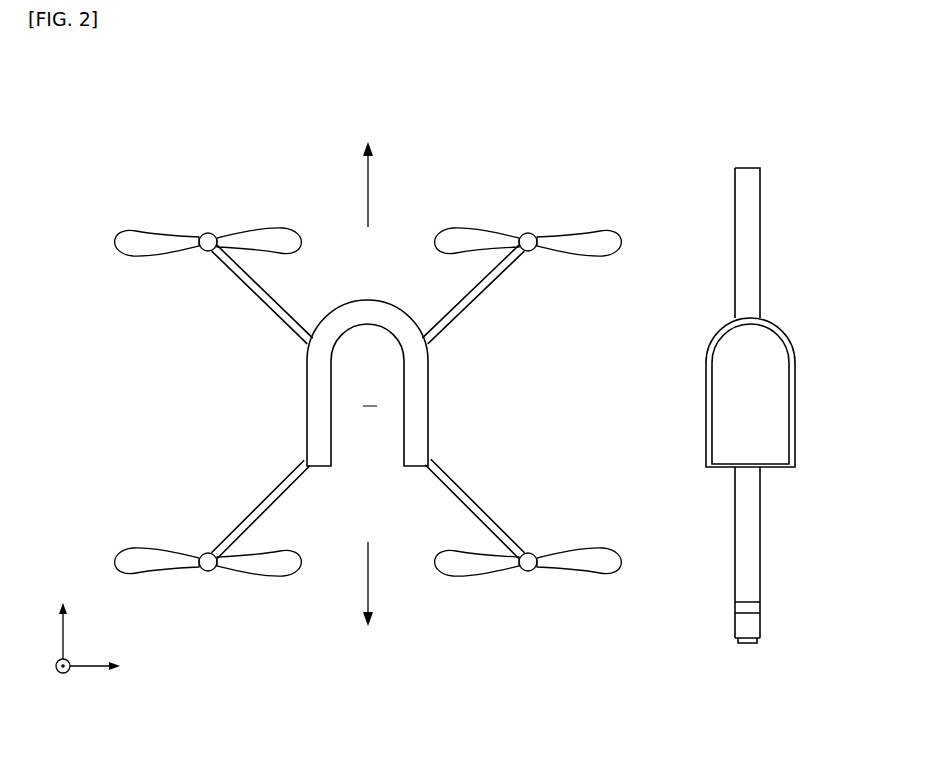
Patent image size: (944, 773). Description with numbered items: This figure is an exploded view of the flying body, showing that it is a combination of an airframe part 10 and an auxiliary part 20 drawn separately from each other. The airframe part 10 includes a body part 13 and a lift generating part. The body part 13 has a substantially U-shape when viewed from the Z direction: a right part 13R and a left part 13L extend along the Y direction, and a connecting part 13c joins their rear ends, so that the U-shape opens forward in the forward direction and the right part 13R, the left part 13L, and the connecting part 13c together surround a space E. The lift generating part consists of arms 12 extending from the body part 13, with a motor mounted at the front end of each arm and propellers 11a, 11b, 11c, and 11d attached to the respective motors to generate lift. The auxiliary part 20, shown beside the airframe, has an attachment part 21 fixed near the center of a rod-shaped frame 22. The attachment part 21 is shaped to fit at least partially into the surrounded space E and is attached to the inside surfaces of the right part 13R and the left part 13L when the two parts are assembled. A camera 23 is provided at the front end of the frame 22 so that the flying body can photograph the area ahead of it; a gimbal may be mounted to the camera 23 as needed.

The airframe part 10 is at (456, 132).
The propeller 11a is at (528, 242).
The propeller 11b is at (208, 242).
The propeller 11c is at (208, 562).
The propeller 11d is at (528, 562).
The arm 12 is at (272, 312).
The body part 13 is at (422, 375).
The connecting part 13c is at (370, 308).
The right part 13R is at (316, 417).
The left part 13L is at (406, 464).
The auxiliary part 20 is at (785, 160).
The attachment part 21 is at (760, 393).
The frame 22 is at (752, 285).
The camera 23 is at (752, 625).